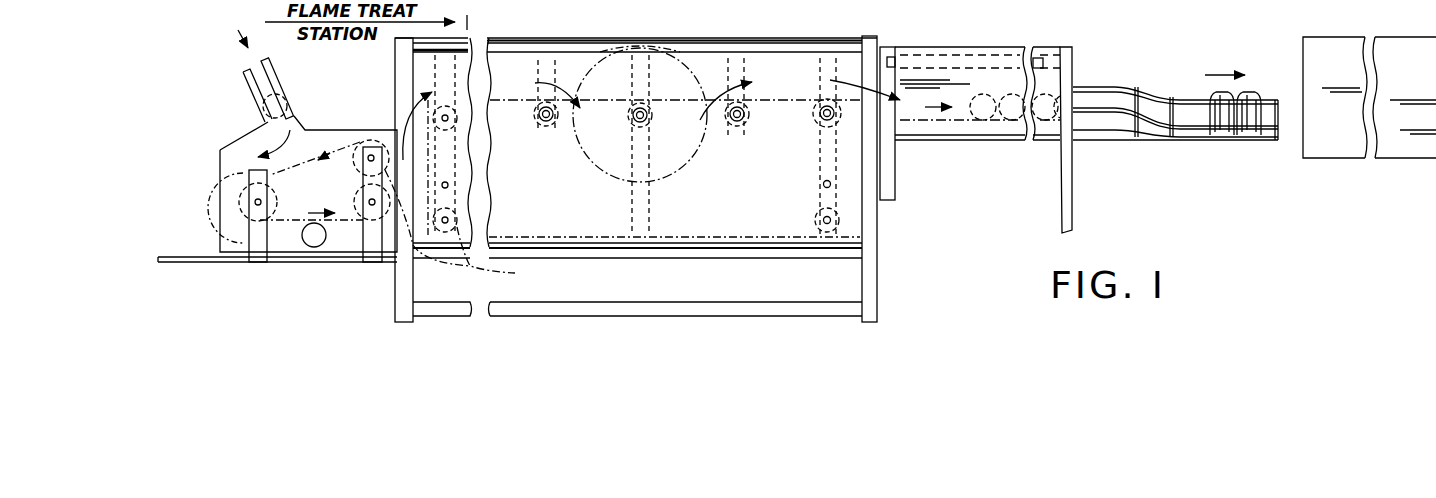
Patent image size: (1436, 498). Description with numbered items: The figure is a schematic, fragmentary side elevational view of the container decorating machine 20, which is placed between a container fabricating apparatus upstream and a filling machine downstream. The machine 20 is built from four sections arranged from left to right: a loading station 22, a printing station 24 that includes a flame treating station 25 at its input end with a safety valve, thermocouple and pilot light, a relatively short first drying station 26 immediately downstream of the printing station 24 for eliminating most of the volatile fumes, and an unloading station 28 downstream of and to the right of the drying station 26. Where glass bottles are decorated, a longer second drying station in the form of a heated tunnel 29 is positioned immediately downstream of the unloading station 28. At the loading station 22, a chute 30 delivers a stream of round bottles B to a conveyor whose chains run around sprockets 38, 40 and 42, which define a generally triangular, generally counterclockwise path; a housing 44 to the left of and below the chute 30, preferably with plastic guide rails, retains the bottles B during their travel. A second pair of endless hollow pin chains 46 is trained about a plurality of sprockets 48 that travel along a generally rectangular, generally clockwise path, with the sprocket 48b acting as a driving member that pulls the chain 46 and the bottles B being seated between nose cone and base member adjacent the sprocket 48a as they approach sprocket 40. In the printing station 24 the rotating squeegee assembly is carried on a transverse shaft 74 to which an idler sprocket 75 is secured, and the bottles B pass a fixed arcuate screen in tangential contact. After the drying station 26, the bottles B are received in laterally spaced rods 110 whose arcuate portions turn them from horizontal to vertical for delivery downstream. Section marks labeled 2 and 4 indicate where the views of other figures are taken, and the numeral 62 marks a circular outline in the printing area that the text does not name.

The section line for FIG. 2 is at (386, 50).
The section line for FIG. 4 is at (729, 0).
The container decorating machine 20 is at (1146, 217).
The loading station 22 is at (208, 136).
The printing station 24 is at (853, 29).
The flame treating station 25 is at (550, 22).
The first drying station 26 is at (943, 186).
The unloading station 28 is at (1161, 77).
The heated tunnel 29 is at (1353, 152).
The chute 30 is at (243, 75).
The sprocket 38 is at (216, 196).
The sprocket 40 is at (352, 261).
The sprocket 42 is at (395, 129).
The housing 44 is at (211, 215).
The hollow pin chains 46 is at (587, 243).
The sprockets 48 is at (538, 122).
The sprocket 48a is at (508, 259).
The driving sprocket 48b is at (815, 124).
The rotary flame head 62 is at (622, 30).
The transverse shaft 74 is at (636, 119).
The idler sprocket 75 is at (672, 17).
The rods 110 is at (1170, 100).
The bottles B is at (262, 108).